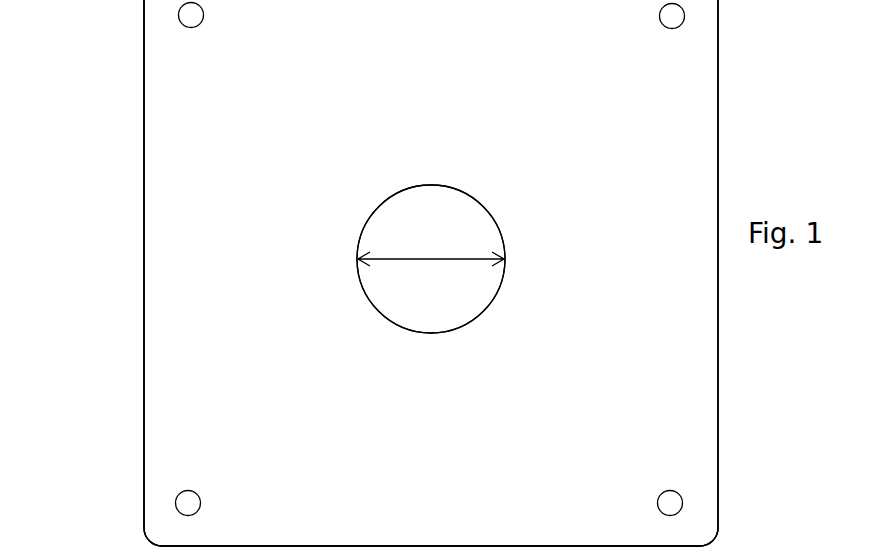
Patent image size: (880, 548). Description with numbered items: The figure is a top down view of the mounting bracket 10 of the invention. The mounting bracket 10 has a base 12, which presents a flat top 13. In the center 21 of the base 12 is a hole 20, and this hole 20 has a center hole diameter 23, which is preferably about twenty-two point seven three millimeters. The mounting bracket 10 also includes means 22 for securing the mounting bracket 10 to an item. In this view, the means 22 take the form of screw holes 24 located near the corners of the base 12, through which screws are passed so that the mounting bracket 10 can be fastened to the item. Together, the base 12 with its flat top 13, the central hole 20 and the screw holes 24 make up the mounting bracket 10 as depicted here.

The mounting bracket 10 is at (766, 60).
The base 12 is at (626, 241).
The flat top 13 is at (222, 283).
The hole 20 is at (447, 217).
The center 21 is at (448, 307).
The means for securing 22 is at (355, 259).
The center hole diameter 23 is at (431, 253).
The screw holes 24 is at (189, 16).